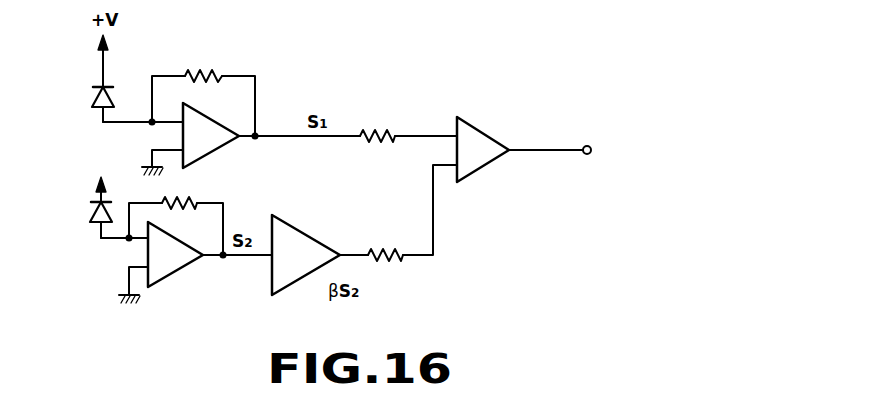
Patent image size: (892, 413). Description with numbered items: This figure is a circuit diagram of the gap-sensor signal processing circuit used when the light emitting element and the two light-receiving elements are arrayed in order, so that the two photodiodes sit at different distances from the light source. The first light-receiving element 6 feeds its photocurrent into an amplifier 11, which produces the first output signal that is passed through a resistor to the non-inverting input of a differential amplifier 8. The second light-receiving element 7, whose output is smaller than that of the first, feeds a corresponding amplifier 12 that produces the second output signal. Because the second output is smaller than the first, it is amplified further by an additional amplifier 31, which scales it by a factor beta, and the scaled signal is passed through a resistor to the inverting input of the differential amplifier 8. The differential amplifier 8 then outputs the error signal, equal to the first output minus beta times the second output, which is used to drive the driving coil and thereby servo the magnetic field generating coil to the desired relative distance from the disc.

The light-receiving element 6 is at (99, 88).
The light-receiving element 7 is at (94, 203).
The differential amplifier 8 is at (489, 134).
The amplifier 11 is at (217, 148).
The amplifier 12 is at (182, 263).
The amplifier 31 is at (315, 240).